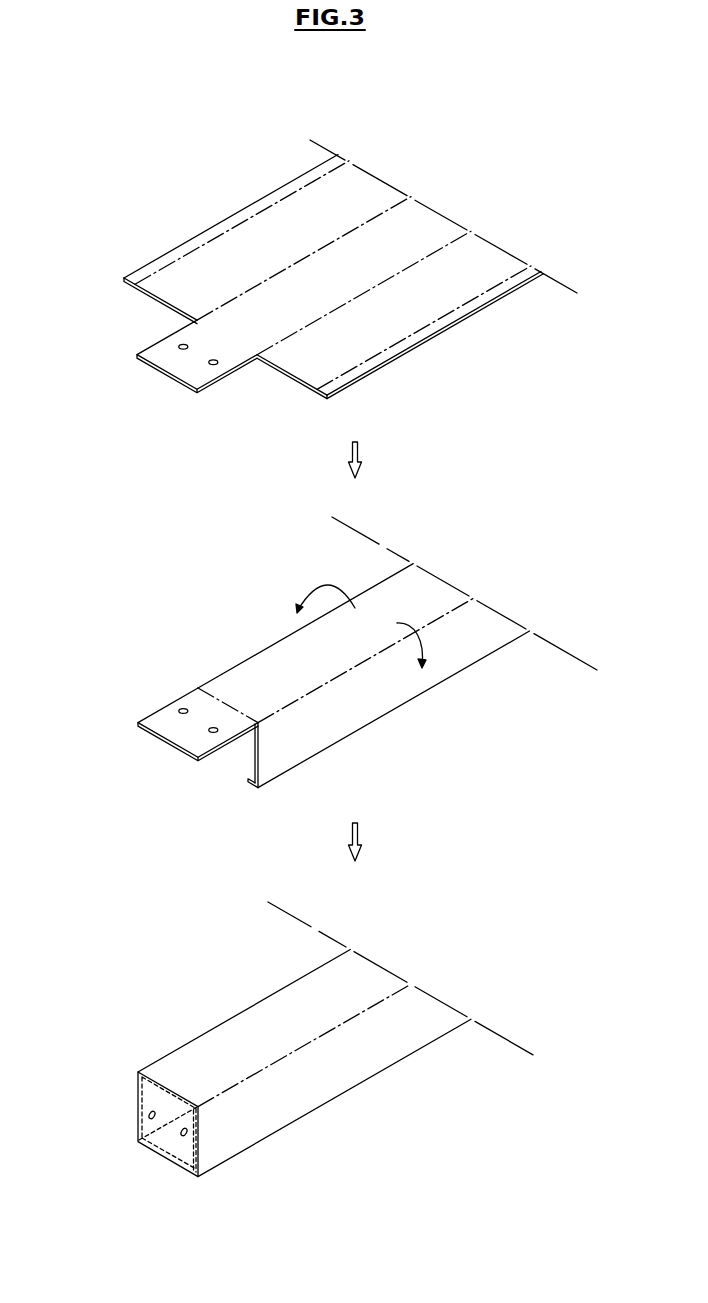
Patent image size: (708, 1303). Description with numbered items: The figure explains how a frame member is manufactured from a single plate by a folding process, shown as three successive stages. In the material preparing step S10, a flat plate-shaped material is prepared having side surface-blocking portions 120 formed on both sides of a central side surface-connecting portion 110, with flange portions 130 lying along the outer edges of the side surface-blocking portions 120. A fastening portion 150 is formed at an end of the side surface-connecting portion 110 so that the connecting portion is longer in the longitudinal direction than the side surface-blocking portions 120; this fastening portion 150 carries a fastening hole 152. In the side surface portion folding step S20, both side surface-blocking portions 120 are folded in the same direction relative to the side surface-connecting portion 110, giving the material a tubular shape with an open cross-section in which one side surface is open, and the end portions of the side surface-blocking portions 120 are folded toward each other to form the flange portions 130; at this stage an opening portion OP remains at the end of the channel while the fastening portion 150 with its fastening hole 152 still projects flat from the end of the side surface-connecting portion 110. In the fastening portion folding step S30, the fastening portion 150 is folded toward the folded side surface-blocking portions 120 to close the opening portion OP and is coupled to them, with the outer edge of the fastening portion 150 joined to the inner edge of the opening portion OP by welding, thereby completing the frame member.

The side surface-connecting portion 110 is at (428, 228).
The side surface-blocking portion 120 is at (365, 188).
The flange portion 130 is at (287, 188).
The fastening portion 150 is at (165, 713).
The fastening hole 152 is at (210, 731).
The opening portion OP is at (246, 767).
The material preparing step S10 is at (176, 152).
The side surface portion folding step S20 is at (181, 590).
The fastening portion folding step S30 is at (184, 952).